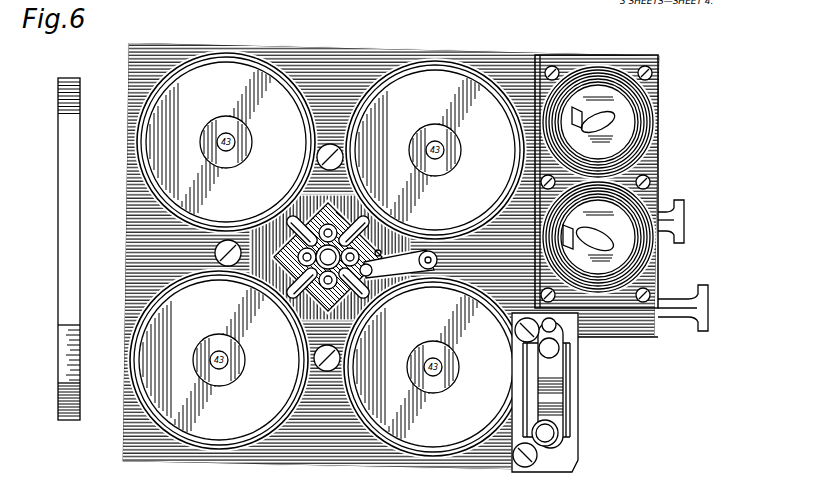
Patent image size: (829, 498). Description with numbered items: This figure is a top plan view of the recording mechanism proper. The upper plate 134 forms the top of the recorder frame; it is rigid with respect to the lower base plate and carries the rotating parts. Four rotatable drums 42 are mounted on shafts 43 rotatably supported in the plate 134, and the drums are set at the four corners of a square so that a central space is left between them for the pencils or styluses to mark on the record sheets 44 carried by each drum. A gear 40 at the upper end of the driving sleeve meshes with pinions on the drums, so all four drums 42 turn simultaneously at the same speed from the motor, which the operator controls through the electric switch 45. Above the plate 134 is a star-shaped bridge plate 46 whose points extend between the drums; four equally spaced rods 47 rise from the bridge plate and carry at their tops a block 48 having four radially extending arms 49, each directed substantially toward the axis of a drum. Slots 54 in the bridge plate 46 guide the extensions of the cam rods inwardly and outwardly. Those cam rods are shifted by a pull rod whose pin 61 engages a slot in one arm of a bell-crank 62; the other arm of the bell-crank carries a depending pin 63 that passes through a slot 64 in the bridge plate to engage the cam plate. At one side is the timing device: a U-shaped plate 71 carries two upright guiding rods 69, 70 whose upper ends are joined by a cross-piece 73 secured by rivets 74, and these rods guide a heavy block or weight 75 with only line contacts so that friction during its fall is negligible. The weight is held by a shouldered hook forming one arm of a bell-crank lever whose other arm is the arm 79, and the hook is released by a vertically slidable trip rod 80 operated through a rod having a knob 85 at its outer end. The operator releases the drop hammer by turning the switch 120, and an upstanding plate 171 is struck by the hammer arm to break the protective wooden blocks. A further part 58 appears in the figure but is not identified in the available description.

The upper plate 134 is at (334, 47).
The upstanding plate 171 is at (60, 262).
The rotatable drums 42 is at (267, 86).
The shafts 43 is at (327, 254).
The record sheets 44 is at (203, 452).
The bridge plate 46 is at (218, 249).
The slots 54 is at (329, 347).
The block 48 is at (330, 213).
The pin 58 is at (342, 212).
The rivets 74 is at (295, 230).
The gear 40 is at (317, 240).
The rods 47 is at (321, 292).
The radial arms 49 is at (331, 306).
The pin 61 is at (328, 257).
The bell-crank 62 is at (400, 264).
The depending pin 63 is at (372, 278).
The slot 64 is at (381, 252).
The electric switch 45 is at (598, 122).
The switch 120 is at (598, 237).
The knob 85 is at (712, 300).
The U-shaped plate 71 is at (576, 466).
The cross-piece 73 is at (566, 423).
The guiding rod 70 is at (573, 352).
The arm 79 is at (563, 372).
The block or weight 75 is at (571, 397).
The trip rod 80 is at (556, 325).
The guiding rod 69 is at (545, 433).